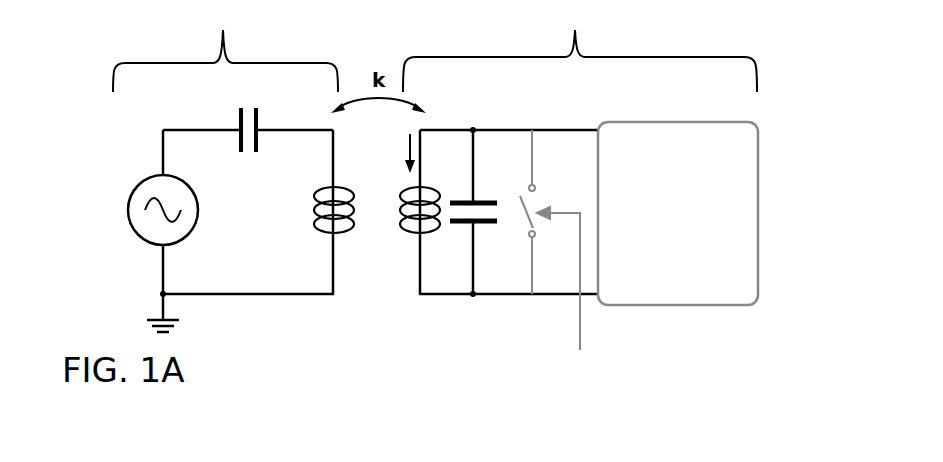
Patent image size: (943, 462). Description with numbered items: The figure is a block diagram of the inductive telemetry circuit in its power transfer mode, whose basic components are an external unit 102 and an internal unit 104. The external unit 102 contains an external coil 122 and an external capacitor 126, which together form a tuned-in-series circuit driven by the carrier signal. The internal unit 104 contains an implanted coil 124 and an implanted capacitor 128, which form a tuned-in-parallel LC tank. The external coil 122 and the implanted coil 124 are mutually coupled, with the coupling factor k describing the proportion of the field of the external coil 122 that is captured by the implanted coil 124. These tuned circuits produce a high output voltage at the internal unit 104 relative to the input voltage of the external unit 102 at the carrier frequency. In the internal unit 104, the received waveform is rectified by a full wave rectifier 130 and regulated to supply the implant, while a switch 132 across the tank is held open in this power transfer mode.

The external unit 102 is at (239, 21).
The internal unit 104 is at (596, 12).
The external coil 122 is at (316, 215).
The implanted coil 124 is at (418, 245).
The external capacitor 126 is at (255, 153).
The implanted capacitor 128 is at (468, 226).
The full wave rectifier 130 is at (750, 238).
The switch 132 is at (533, 205).